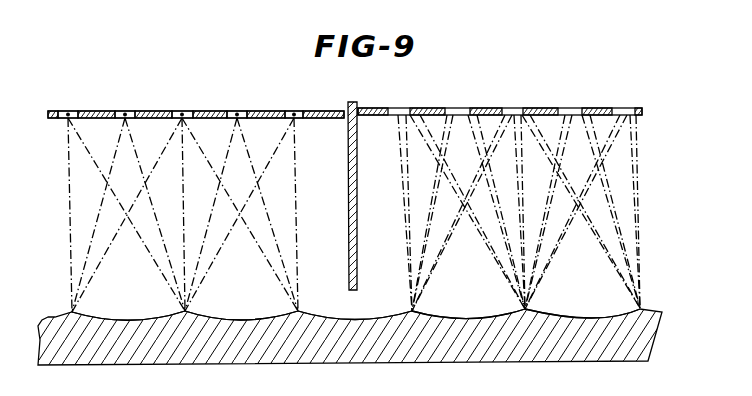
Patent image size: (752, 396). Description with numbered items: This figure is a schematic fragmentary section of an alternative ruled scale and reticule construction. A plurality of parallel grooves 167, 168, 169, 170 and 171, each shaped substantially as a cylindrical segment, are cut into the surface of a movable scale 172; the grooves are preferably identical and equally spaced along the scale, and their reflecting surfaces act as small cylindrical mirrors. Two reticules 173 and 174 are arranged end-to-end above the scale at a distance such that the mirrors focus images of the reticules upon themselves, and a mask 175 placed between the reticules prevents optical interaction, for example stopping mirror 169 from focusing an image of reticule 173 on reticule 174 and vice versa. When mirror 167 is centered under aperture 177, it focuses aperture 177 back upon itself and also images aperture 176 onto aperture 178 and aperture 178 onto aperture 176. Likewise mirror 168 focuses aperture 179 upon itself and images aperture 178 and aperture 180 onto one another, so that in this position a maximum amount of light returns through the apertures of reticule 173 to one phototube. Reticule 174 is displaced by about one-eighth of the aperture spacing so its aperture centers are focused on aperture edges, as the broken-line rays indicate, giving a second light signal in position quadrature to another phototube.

The groove 167 is at (134, 310).
The groove 168 is at (254, 310).
The groove 169 is at (344, 319).
The groove 170 is at (479, 308).
The groove 171 is at (584, 308).
The movable scale 172 is at (657, 307).
The reticule 173 is at (108, 103).
The reticule 174 is at (591, 108).
The mask 175 is at (348, 168).
The aperture 176 is at (77, 96).
The aperture 177 is at (126, 112).
The aperture 178 is at (196, 100).
The aperture 179 is at (248, 100).
The aperture 180 is at (311, 100).